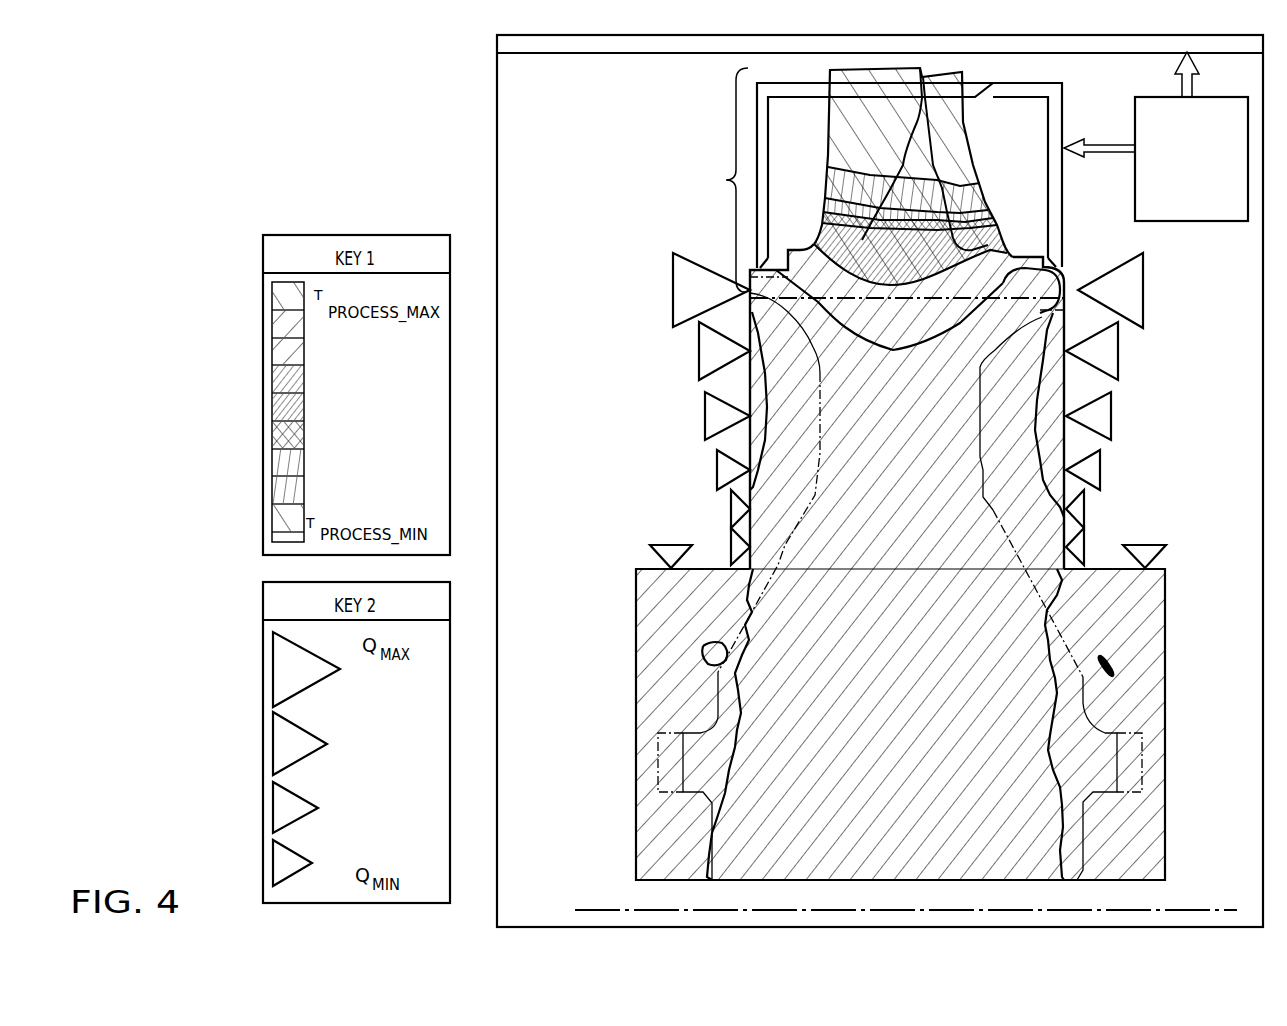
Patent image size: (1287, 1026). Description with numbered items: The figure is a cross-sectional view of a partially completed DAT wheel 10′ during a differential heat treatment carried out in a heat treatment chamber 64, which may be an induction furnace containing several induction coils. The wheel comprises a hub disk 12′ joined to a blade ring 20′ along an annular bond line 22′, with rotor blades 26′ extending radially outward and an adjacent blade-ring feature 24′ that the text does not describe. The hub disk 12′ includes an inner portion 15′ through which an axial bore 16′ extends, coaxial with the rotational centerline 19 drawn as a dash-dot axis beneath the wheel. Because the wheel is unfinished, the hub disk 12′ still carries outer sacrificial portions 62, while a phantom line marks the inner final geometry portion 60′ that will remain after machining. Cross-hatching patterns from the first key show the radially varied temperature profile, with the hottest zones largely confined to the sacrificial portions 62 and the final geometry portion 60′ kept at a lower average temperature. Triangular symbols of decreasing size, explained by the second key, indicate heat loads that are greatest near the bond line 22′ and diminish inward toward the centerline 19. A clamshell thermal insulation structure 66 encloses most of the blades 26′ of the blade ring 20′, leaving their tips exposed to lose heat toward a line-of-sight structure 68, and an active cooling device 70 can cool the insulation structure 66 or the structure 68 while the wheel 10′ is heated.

The line-of-sight structure 68 is at (1050, 37).
The heat treatment chamber 64 is at (548, 139).
The active cooling device 70 is at (1208, 210).
The thermal insulation structure 66 is at (1010, 92).
The outer sacrificial portions 62 is at (686, 616).
The hub disk 12′ is at (939, 723).
The DAT wheel 10′ is at (809, 559).
The blade ring 20′ is at (727, 180).
The rotor blades 26′ is at (846, 155).
The airfoil suction side 24′ is at (991, 163).
The annular bond line 22′ is at (893, 298).
The inner final geometry portion 60′ is at (980, 410).
The inner portion of hub disk 15′ is at (906, 866).
The axial bore 16′ is at (906, 907).
The centerline 19 is at (1203, 910).